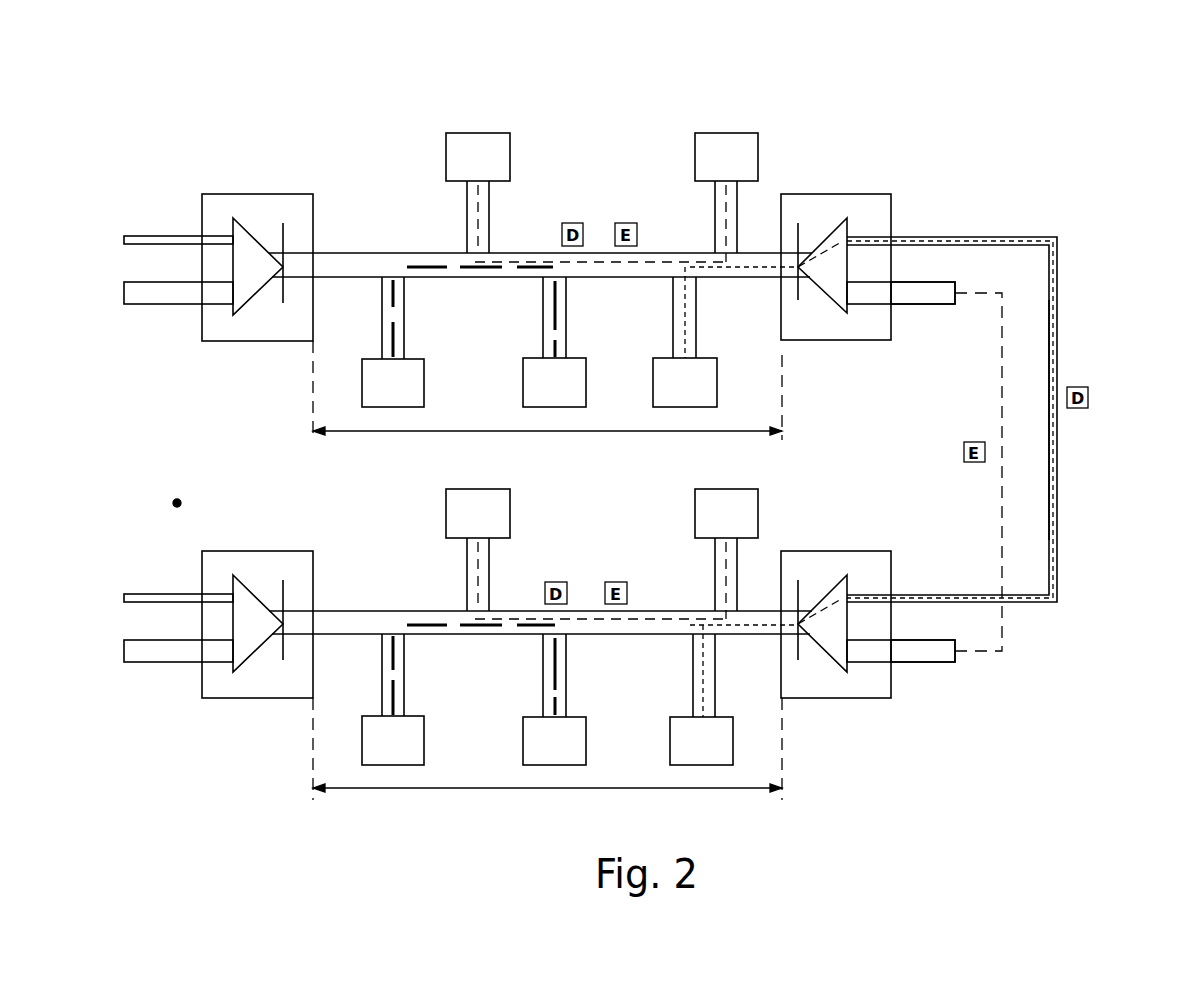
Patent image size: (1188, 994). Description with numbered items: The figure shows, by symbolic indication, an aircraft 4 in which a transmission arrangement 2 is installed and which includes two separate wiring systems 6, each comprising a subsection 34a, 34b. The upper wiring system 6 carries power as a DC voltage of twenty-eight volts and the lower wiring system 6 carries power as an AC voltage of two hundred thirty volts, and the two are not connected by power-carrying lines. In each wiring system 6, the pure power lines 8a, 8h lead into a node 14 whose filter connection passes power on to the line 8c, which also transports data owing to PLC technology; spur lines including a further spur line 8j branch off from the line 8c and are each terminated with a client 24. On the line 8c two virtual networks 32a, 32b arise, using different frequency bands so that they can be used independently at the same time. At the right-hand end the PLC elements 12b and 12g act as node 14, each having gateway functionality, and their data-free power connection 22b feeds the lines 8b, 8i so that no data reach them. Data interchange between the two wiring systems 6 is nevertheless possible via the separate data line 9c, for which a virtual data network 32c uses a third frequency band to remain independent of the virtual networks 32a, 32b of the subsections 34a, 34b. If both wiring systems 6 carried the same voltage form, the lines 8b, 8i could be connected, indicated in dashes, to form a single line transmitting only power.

The transmission arrangement 2 is at (1020, 126).
The aircraft 4 is at (177, 500).
The wiring system 6 is at (371, 140).
The line 8a is at (158, 304).
The line 8b is at (930, 304).
The line 8c is at (365, 253).
The line 8h is at (153, 662).
The line 8i is at (937, 662).
The spur line 8j is at (675, 333).
The data line 9c is at (1057, 337).
The PLC element 12b is at (836, 225).
The PLC element 12g is at (836, 583).
The node 14 is at (833, 194).
The power connection 22b is at (891, 282).
The client 24 is at (653, 383).
The virtual network 32a is at (472, 272).
The virtual network 32b is at (727, 228).
The virtual data network 32c is at (688, 343).
The subsection 34a is at (612, 431).
The subsection 34b is at (425, 788).